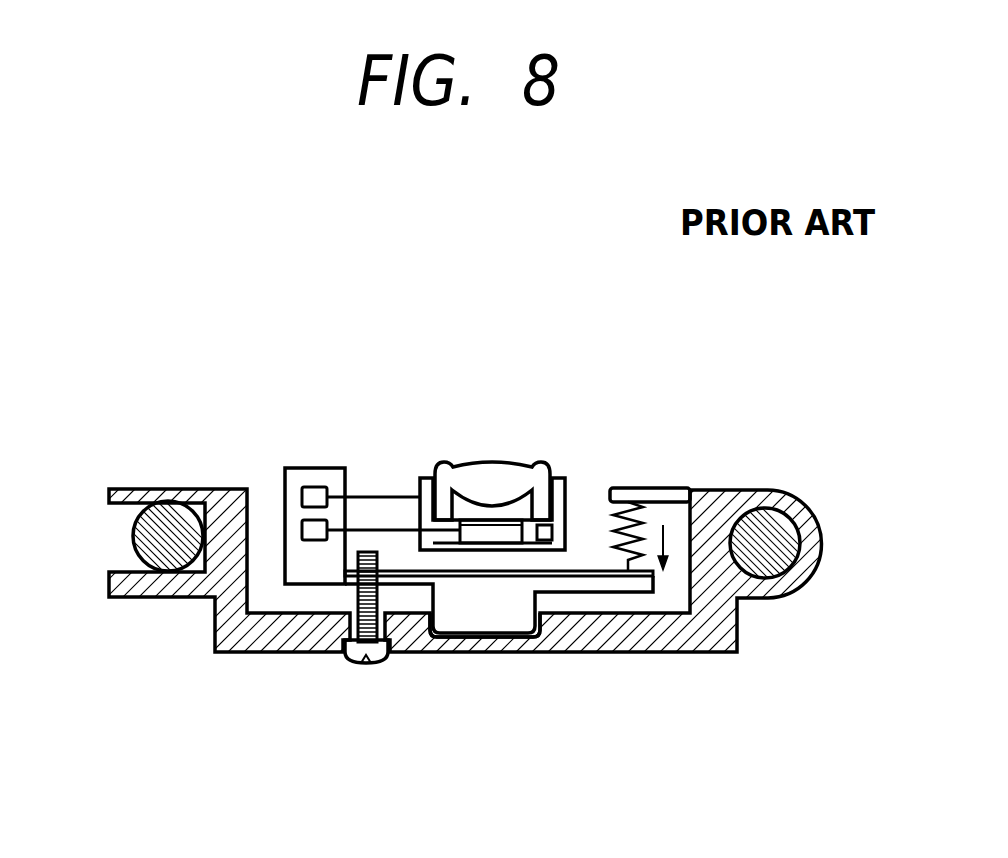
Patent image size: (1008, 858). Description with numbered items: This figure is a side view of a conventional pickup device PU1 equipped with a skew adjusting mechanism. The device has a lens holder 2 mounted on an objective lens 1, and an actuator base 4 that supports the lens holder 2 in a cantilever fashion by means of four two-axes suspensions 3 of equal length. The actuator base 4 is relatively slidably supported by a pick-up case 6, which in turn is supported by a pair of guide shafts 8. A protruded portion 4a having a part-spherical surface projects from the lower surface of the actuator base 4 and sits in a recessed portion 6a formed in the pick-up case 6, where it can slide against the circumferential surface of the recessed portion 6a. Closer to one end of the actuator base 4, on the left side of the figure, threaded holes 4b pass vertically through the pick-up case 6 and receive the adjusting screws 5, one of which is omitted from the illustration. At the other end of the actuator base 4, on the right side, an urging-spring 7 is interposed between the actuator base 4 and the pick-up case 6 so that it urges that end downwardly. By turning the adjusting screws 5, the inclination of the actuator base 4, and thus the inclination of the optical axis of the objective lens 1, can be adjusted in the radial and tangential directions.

The pickup device PU1 is at (228, 372).
The objective lens 1 is at (499, 468).
The lens holder 2 is at (570, 488).
The 2-axes suspensions 3 is at (397, 527).
The actuator base 4 is at (318, 468).
The protruded portion 4a is at (523, 607).
The threaded holes 4b is at (352, 578).
The adjusting screws 5 is at (383, 663).
The pick-up case 6 is at (230, 653).
The recessed portion 6a is at (489, 636).
The urging-spring 7 is at (632, 520).
The guide shafts 8 is at (150, 537).